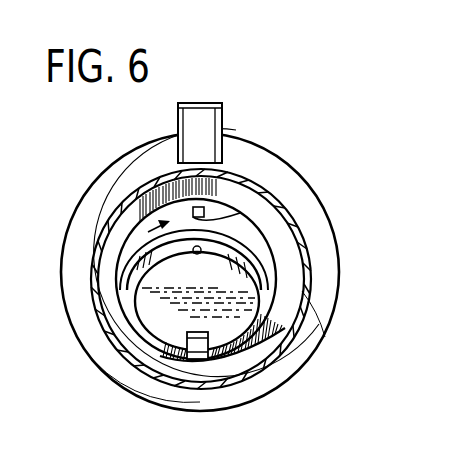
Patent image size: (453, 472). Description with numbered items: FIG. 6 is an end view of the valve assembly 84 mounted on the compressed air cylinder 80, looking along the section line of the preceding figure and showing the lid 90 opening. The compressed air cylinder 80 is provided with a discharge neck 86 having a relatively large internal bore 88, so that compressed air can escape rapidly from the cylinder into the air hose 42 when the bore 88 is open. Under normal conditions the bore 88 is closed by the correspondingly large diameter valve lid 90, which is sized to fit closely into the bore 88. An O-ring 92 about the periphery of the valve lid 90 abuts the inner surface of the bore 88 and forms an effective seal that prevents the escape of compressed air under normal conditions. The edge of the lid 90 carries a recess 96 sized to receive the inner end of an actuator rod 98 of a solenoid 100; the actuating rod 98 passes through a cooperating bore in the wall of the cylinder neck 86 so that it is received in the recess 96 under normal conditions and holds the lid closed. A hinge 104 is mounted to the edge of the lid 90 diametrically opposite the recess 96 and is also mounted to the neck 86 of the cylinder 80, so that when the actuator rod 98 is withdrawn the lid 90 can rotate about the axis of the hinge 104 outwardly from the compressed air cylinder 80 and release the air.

The compressed air cylinder 80 is at (138, 163).
The air hose 42 is at (130, 186).
The discharge neck 86 is at (115, 200).
The internal bore 88 is at (120, 242).
The O-ring 92 is at (190, 257).
The recess 96 is at (165, 312).
The valve lid 90 is at (178, 345).
The hinge 104 is at (125, 388).
The solenoid 100 is at (222, 117).
The actuator rod 98 is at (240, 213).
The valve assembly 84 is at (280, 151).